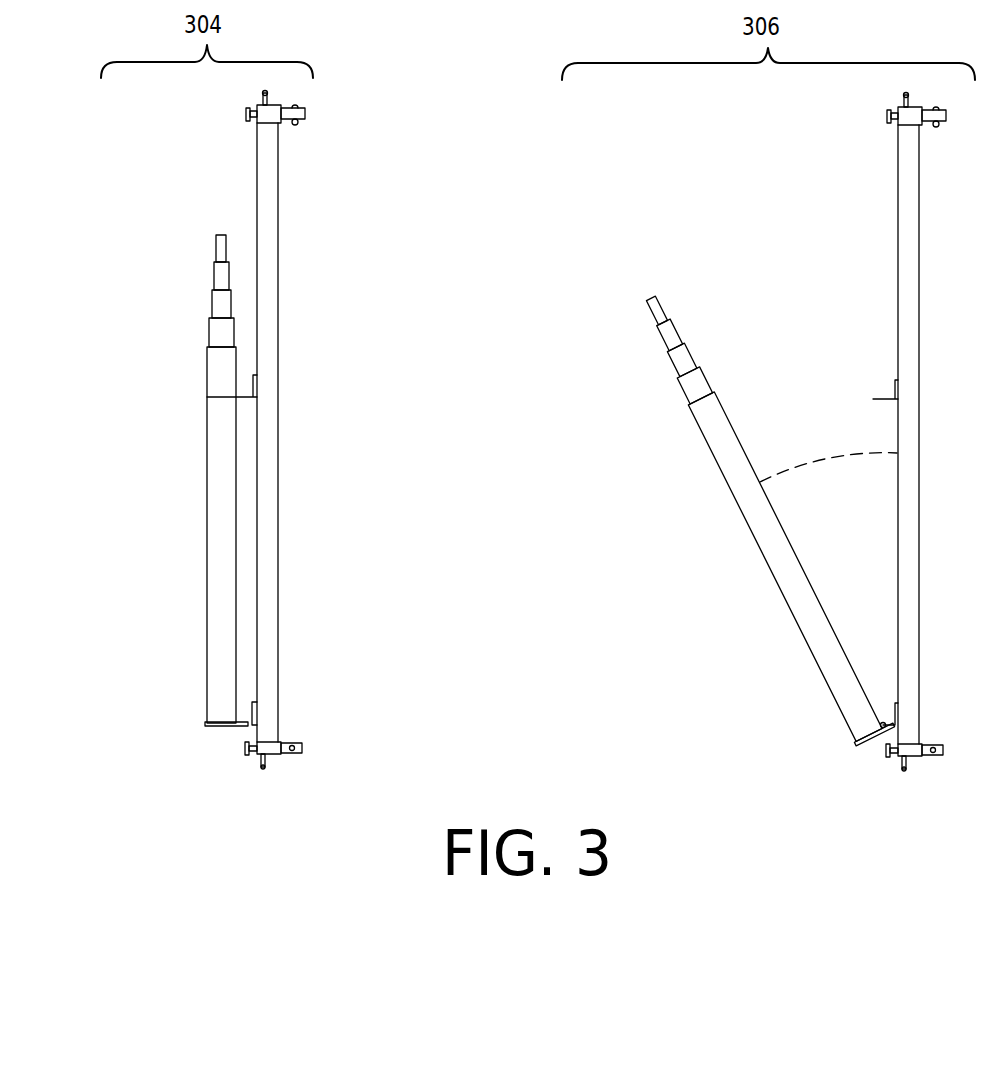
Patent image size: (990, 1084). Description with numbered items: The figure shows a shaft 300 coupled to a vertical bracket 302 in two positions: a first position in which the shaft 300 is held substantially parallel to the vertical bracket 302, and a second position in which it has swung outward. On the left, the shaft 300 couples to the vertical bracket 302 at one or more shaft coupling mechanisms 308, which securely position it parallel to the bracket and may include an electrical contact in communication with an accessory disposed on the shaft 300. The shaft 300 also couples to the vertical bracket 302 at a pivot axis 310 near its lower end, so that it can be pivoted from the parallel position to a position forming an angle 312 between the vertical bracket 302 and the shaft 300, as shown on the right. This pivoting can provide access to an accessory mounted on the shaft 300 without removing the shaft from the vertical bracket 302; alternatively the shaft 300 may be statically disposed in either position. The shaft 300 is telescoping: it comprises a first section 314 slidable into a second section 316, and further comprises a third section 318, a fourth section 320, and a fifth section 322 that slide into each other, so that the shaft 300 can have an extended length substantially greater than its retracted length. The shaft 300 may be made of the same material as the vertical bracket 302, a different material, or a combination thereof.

The shaft 300 is at (95, 213).
The vertical bracket 302 is at (266, 249).
The shaft coupling mechanism 308 is at (250, 724).
The pivot axis 310 is at (880, 744).
The angle 312 is at (836, 455).
The first section 314 is at (212, 258).
The second section 316 is at (215, 380).
The third section 318 is at (212, 288).
The fourth section 320 is at (215, 318).
The fifth section 322 is at (212, 350).